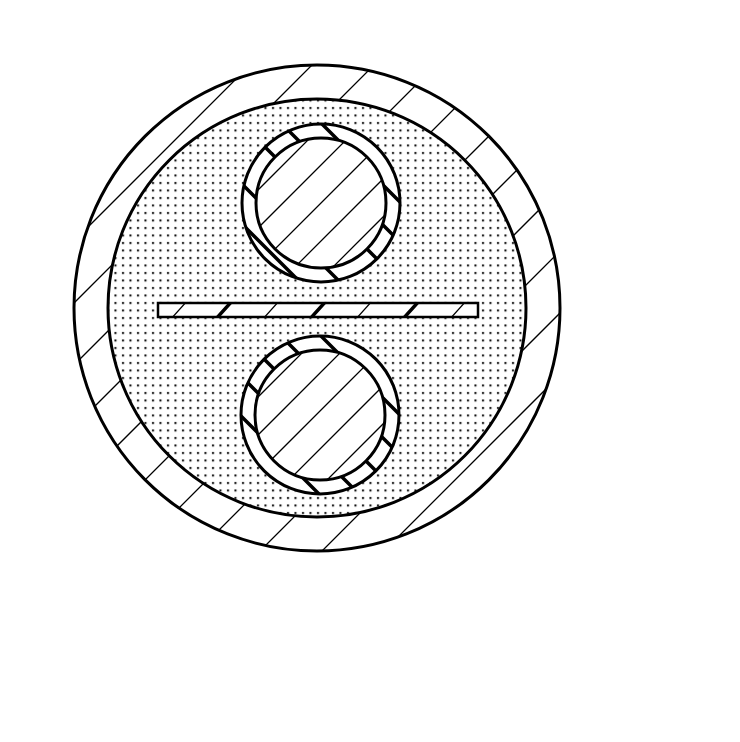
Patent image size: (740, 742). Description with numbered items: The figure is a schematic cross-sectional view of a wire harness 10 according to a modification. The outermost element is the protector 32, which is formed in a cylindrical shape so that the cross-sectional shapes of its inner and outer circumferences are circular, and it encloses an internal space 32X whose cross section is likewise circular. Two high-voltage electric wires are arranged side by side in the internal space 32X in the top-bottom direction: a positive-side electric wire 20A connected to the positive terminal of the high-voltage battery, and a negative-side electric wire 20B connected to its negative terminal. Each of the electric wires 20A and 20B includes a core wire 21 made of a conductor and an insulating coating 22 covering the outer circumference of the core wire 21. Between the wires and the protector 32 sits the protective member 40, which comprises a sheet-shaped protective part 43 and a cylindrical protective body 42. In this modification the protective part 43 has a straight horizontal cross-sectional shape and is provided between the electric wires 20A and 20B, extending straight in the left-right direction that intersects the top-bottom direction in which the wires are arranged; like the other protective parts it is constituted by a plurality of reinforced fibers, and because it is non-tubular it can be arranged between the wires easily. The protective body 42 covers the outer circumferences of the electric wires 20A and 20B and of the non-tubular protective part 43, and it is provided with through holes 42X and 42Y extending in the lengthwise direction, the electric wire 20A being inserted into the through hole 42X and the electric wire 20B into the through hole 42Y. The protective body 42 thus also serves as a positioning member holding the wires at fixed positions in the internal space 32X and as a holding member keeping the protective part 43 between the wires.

The wire harness 10 is at (623, 88).
The positive-side electric wire 20A is at (108, 40).
The negative-side electric wire 20B is at (108, 567).
The core wire 21 is at (277, 182).
The insulating coating 22 is at (290, 137).
The protector 32 is at (92, 236).
The internal space 32X is at (111, 290).
The protective member 40 is at (622, 282).
The protective body 42 is at (500, 327).
The through hole 42X is at (243, 190).
The through hole 42Y is at (243, 420).
The protective part 43 is at (479, 303).